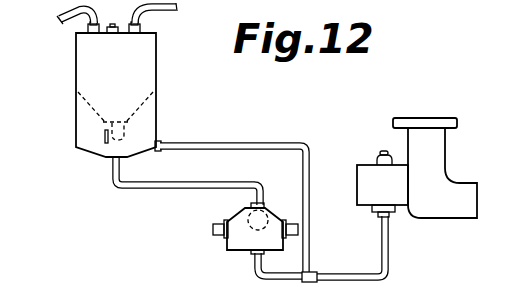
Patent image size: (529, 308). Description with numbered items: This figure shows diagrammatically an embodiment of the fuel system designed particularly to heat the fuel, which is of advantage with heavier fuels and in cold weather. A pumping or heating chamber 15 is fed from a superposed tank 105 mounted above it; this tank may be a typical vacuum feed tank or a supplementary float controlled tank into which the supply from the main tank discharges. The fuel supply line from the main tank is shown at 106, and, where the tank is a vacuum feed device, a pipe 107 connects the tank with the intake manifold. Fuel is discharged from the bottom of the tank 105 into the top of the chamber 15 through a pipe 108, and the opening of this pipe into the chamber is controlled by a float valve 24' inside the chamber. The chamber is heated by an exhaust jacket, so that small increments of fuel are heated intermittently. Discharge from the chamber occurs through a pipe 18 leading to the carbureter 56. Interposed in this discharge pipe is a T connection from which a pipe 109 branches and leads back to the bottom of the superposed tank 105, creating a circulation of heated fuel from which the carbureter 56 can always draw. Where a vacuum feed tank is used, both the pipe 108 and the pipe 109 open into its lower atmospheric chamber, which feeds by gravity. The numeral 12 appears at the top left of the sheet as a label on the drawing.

The apparatus 12 is at (19, 0).
The pumping or heating chamber 15 is at (242, 236).
The discharge pipe 18 is at (258, 277).
The float valve 24' is at (229, 211).
The carbureter 56 is at (447, 163).
The superposed tank 105 is at (93, 110).
The fuel supply line 106 is at (63, 26).
The pipe 107 is at (165, 10).
The pipe 108 is at (153, 188).
The pipe 109 is at (308, 172).